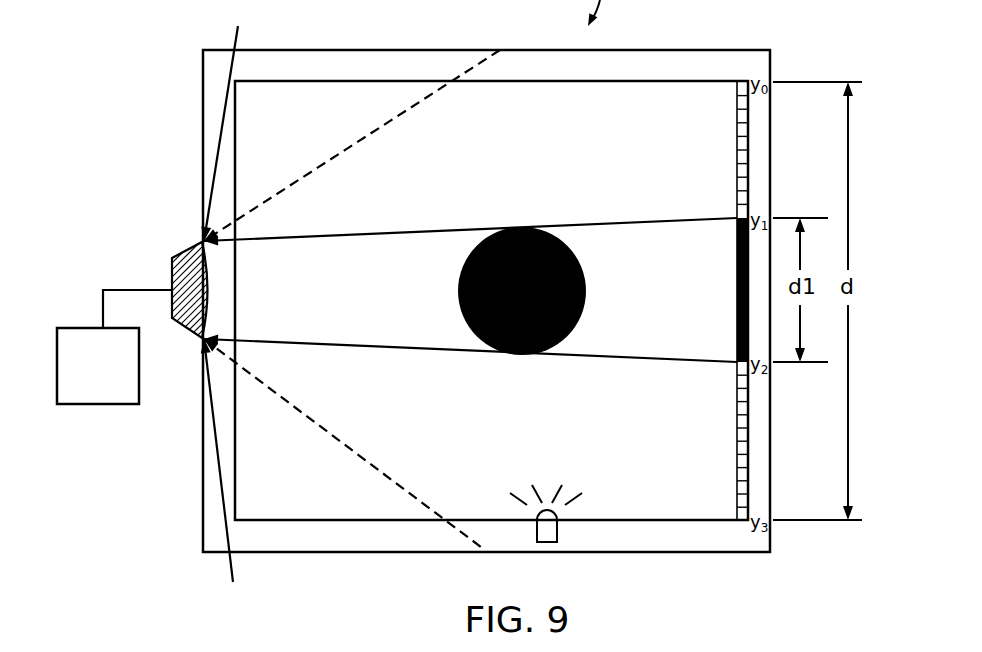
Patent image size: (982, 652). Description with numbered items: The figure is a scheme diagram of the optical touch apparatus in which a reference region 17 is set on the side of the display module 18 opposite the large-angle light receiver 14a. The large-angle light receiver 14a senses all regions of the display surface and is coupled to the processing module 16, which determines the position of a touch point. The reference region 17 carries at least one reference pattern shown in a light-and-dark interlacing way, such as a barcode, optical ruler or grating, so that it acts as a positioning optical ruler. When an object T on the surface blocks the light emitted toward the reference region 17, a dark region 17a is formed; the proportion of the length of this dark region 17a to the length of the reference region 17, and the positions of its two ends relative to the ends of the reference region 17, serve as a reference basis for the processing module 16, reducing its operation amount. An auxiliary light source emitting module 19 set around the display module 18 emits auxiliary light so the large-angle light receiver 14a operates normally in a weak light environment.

The large-angle light receiver 14a is at (172, 258).
The processing module 16 is at (93, 404).
The reference region 17 is at (740, 392).
The dark region 17a is at (748, 270).
The display module 18 is at (387, 65).
The auxiliary light source emitting module 19 is at (548, 535).
The target object T is at (567, 337).